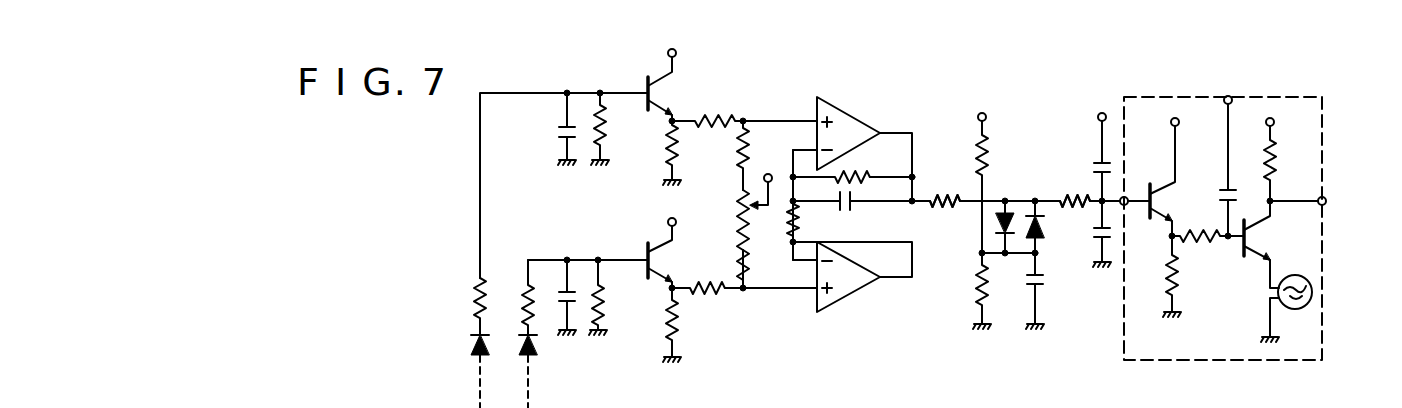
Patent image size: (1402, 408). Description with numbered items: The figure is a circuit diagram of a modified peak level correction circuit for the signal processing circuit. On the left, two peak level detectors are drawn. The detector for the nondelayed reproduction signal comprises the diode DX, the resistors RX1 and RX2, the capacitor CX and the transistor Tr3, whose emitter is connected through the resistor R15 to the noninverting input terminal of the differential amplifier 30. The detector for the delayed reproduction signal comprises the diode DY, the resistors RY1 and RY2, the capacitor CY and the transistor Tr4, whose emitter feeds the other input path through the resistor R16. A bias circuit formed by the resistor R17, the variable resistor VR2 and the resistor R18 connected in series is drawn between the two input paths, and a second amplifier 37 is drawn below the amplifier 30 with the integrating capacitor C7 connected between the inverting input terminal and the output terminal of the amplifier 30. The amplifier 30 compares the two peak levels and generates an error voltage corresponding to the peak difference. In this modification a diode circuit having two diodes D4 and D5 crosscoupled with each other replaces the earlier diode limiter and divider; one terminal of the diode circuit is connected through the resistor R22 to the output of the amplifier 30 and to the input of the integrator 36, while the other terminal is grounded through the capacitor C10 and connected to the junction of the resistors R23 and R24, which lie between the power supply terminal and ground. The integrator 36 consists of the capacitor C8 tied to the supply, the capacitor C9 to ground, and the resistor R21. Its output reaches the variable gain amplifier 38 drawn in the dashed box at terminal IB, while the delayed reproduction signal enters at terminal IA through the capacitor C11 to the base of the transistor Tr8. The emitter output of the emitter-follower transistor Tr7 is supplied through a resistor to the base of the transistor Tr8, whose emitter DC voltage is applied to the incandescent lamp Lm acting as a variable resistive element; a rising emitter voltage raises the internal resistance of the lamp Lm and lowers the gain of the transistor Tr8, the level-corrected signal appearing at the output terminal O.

The capacitor CY is at (554, 131).
The resistor RY2 is at (604, 126).
The transistor Tr4 is at (658, 92).
The resistor R16 is at (716, 128).
The resistor R18 is at (752, 142).
The variable resistor VR2 is at (736, 214).
The resistor R17 is at (750, 266).
The differential amplifier 30 is at (848, 112).
The integrating capacitor C7 is at (851, 207).
The operational amplifier 37 is at (850, 294).
The resistor R22 is at (944, 193).
The resistor R23 is at (975, 152).
The resistor R24 is at (976, 286).
The diode D4 is at (996, 224).
The diode D5 is at (1032, 242).
The capacitor C10 is at (1044, 284).
The resistor R21 is at (1062, 196).
The integrator 36 is at (1078, 182).
The capacitor C8 is at (1096, 162).
The capacitor C9 is at (1096, 240).
The variable gain amplifier 38 is at (1226, 96).
The input terminal IA is at (1230, 99).
The input terminal IB is at (1128, 198).
The transistor Tr7 is at (1162, 196).
The capacitor C11 is at (1238, 198).
The transistor Tr8 is at (1272, 240).
The incandescent lamp Lm is at (1308, 303).
The output terminal O is at (1326, 205).
The resistor RY1 is at (476, 292).
The diode DY is at (473, 361).
The resistor RX1 is at (536, 316).
The diode DX is at (527, 363).
The capacitor CX is at (562, 289).
The resistor RX2 is at (597, 306).
The transistor Tr3 is at (660, 262).
The resistor R15 is at (712, 298).